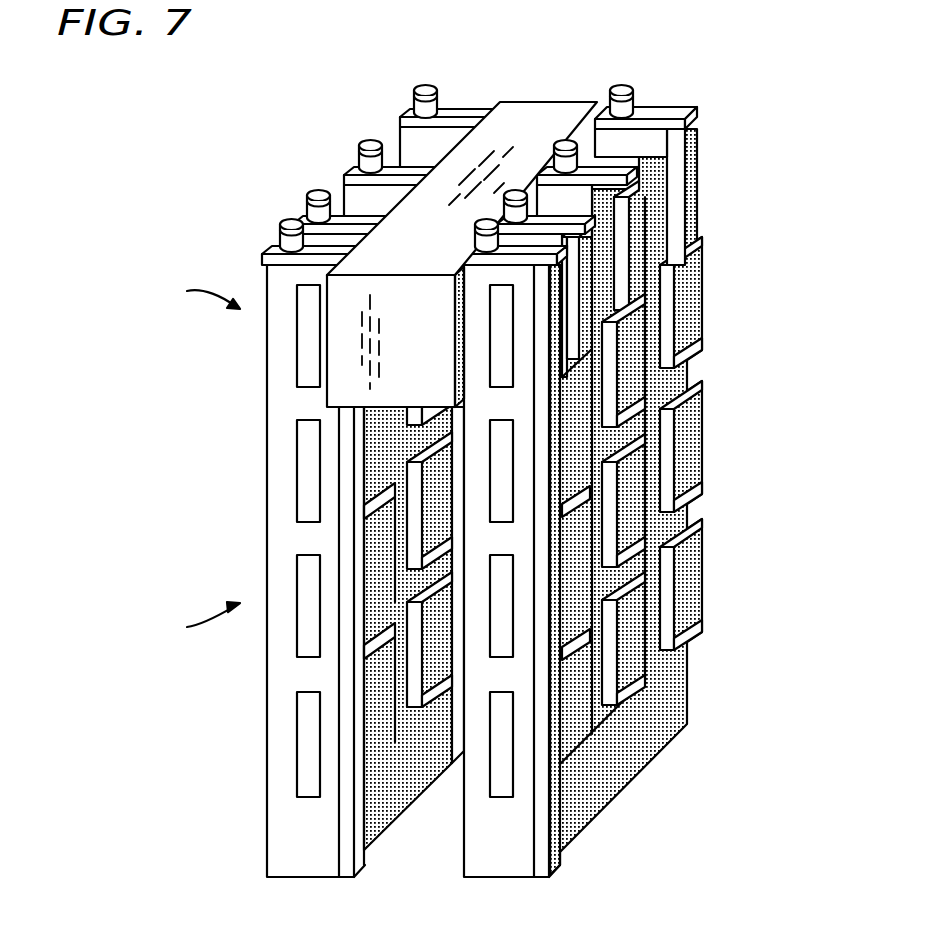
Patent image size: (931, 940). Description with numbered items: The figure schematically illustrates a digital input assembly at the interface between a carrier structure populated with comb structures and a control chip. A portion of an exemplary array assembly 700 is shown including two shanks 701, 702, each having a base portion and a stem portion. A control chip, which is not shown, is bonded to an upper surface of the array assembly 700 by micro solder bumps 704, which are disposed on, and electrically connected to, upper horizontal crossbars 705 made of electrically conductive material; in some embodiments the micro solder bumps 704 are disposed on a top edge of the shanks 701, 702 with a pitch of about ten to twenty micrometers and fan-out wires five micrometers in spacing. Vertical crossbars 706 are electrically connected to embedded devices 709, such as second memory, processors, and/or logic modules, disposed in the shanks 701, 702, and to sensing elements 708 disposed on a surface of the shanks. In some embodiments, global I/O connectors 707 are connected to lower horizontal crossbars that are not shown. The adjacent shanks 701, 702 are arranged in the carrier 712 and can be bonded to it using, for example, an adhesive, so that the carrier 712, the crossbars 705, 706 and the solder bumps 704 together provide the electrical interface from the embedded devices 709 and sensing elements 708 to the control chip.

The array assembly 700 is at (193, 104).
The shank 701 is at (312, 881).
The shank 702 is at (507, 881).
The micro solder bumps 704 is at (364, 149).
The upper horizontal crossbars 705 is at (662, 110).
The vertical crossbars 706 is at (703, 189).
The global I/O connectors 707 is at (558, 826).
The sensing elements 708 is at (703, 449).
The embedded devices 709 is at (300, 367).
The carrier 712 is at (547, 115).